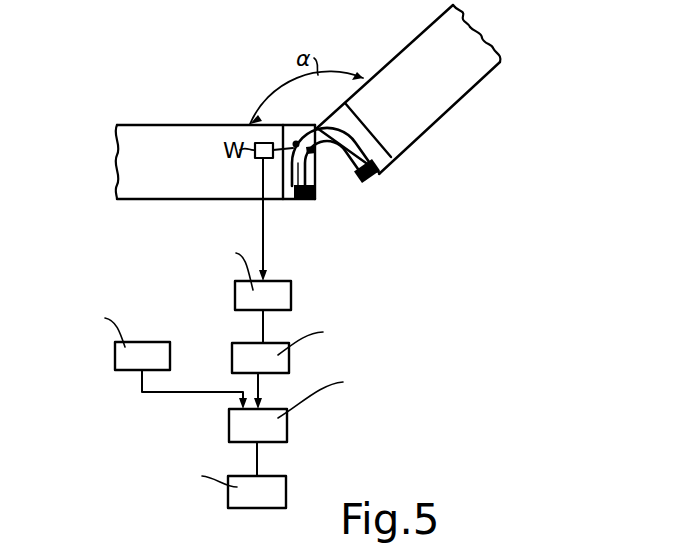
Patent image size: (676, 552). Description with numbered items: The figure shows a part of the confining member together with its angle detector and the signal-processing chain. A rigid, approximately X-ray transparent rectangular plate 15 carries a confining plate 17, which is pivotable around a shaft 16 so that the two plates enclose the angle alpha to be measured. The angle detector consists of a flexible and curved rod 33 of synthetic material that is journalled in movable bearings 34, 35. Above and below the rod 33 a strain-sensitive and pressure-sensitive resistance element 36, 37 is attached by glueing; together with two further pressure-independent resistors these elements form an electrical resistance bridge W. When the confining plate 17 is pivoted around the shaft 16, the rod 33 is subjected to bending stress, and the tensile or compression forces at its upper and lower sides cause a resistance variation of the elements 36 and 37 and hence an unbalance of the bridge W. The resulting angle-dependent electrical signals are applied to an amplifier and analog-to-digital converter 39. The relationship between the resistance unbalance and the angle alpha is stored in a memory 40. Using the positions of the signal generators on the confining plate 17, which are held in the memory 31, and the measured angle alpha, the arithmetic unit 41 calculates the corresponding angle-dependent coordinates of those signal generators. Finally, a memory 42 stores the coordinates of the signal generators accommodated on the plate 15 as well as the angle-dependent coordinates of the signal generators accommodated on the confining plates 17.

The rectangular plate 15 is at (183, 143).
The shaft 16 is at (318, 129).
The confining plate 17 is at (453, 90).
The memory 31 is at (158, 348).
The flexible curved rod 33 is at (360, 140).
The movable bearing 34 is at (376, 180).
The movable bearing 35 is at (312, 200).
The strain-sensitive and pressure-sensitive resistance element 36 is at (298, 131).
The strain-sensitive and pressure-sensitive resistance element 37 is at (316, 160).
The amplifier and analog-to-digital converter 39 is at (291, 293).
The memory 40 is at (289, 358).
The arithmetic unit 41 is at (287, 428).
The memory 42 is at (286, 492).